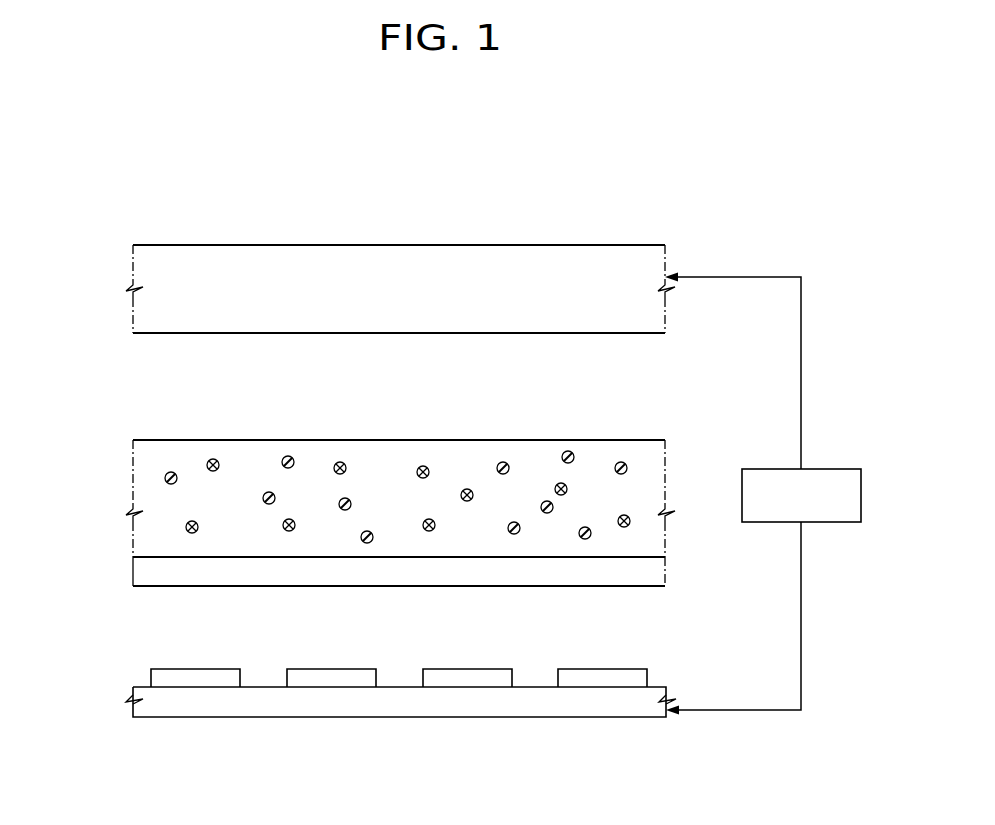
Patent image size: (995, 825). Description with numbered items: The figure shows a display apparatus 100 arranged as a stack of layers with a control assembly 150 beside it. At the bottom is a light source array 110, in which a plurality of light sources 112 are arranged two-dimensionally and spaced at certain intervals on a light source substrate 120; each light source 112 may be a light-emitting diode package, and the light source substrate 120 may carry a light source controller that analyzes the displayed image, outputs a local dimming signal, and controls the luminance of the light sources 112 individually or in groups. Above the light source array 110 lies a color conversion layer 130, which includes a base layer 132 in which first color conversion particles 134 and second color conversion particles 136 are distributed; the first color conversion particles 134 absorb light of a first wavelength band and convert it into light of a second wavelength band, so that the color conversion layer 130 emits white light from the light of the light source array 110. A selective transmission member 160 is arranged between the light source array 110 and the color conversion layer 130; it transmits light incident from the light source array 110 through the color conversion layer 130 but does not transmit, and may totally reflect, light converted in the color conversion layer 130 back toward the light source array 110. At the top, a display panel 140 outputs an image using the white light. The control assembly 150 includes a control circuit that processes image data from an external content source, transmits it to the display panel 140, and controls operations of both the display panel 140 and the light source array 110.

The display apparatus 100 is at (698, 195).
The light source array 110 is at (115, 666).
The light source 112 is at (193, 672).
The light source substrate 120 is at (133, 703).
The color conversion layer 130 is at (115, 474).
The base layer 132 is at (133, 512).
The first color conversion particle 134 is at (213, 458).
The second color conversion particle 136 is at (288, 455).
The display panel 140 is at (133, 288).
The control assembly 150 is at (837, 469).
The selective transmission member 160 is at (133, 572).